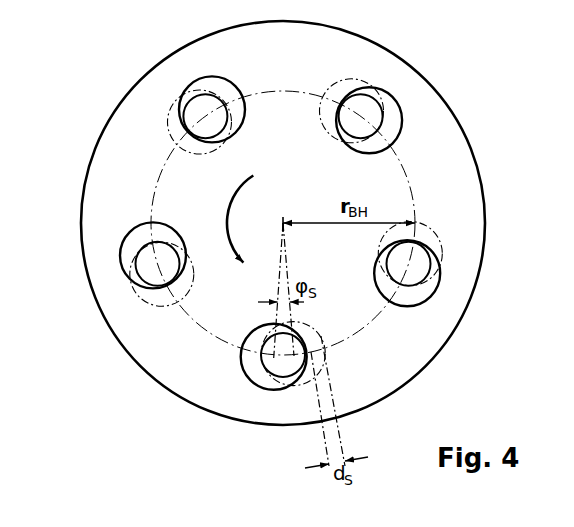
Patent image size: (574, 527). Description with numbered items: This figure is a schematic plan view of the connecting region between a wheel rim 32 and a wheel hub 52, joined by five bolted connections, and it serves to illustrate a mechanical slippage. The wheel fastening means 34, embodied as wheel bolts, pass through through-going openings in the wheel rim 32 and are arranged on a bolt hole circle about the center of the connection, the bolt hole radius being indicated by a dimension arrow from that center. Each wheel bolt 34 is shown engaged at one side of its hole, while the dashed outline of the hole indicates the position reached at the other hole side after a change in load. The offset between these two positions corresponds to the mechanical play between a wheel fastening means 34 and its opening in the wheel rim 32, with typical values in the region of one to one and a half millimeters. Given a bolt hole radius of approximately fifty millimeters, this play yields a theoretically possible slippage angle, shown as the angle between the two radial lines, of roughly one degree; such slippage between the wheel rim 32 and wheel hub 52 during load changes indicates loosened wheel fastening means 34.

The wheel rim 32 is at (122, 207).
The wheel fastening means 34 is at (195, 107).
The wheel hub 52 is at (393, 122).